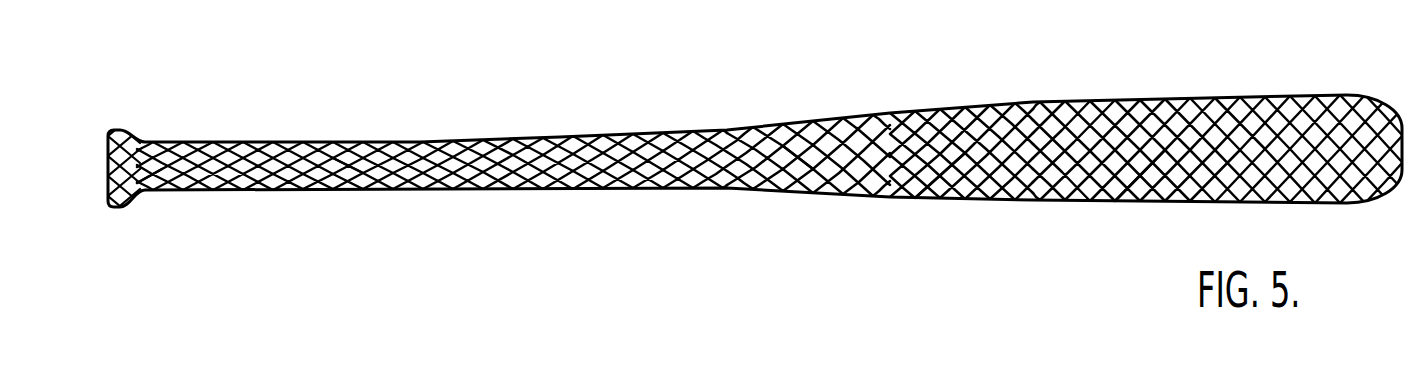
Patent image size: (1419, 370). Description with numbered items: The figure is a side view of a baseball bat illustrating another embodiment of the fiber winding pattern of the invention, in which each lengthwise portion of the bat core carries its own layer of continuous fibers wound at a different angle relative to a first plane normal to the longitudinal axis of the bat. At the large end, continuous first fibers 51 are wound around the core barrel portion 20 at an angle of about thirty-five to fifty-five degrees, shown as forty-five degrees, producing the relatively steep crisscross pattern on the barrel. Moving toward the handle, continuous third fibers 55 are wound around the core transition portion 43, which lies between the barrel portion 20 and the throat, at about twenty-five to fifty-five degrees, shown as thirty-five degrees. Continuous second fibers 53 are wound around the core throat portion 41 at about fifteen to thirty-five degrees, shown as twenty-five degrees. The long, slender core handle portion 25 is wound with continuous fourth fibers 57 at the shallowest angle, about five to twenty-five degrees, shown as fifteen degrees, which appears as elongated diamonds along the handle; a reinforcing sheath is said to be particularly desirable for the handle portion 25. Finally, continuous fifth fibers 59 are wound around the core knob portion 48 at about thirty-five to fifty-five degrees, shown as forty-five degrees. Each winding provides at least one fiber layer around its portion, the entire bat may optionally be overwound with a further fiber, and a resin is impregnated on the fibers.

The core barrel portion 20 is at (1395, 73).
The core handle portion 25 is at (727, 83).
The core throat portion 41 is at (890, 80).
The core transition portion 43 is at (1033, 78).
The core knob portion 48 is at (138, 96).
The first fibers 51 is at (1123, 236).
The second fibers 53 is at (835, 226).
The third fibers 55 is at (945, 226).
The fourth fibers 57 is at (377, 218).
The fifth fibers 59 is at (160, 222).